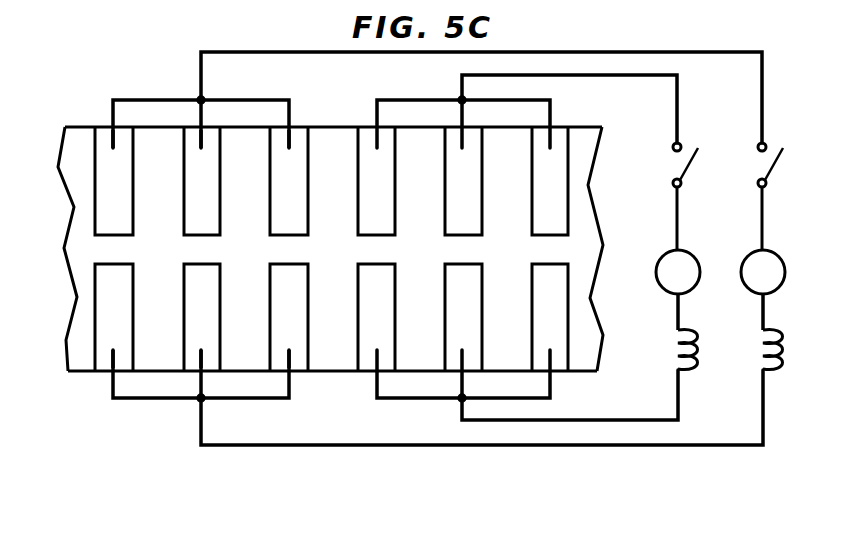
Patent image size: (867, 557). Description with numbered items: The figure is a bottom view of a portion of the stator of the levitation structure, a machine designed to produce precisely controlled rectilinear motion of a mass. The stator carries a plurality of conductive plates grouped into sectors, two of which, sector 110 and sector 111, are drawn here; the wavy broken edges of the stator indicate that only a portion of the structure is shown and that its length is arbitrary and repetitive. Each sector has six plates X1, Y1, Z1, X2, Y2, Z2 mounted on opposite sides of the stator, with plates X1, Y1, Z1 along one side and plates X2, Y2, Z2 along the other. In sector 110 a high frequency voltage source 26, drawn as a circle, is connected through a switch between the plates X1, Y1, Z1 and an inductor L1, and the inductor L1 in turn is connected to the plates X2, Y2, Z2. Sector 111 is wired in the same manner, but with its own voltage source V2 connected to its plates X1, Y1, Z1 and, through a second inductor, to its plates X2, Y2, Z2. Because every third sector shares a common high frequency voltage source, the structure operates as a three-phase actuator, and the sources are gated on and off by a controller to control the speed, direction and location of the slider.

The sector 110 is at (136, 75).
The sector 111 is at (440, 88).
The voltage source V1 26 is at (801, 226).
The inductor L1 is at (779, 345).
The plate X1 is at (106, 366).
The plate Y1 is at (192, 366).
The plate Z1 is at (297, 366).
The plate X2 is at (106, 137).
The plate Y2 is at (191, 130).
The plate Z2 is at (300, 130).
The voltage source V2 is at (678, 290).